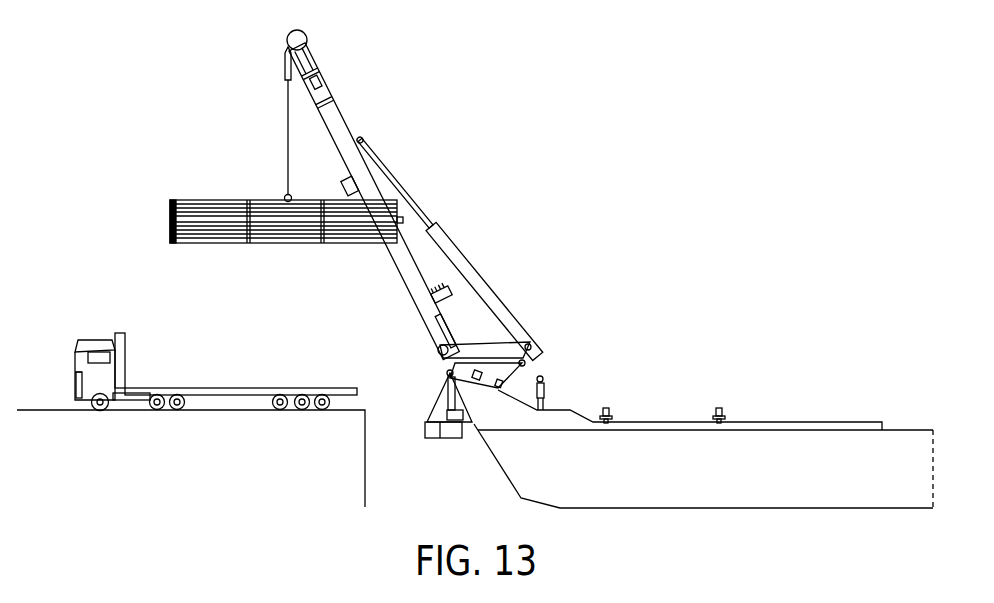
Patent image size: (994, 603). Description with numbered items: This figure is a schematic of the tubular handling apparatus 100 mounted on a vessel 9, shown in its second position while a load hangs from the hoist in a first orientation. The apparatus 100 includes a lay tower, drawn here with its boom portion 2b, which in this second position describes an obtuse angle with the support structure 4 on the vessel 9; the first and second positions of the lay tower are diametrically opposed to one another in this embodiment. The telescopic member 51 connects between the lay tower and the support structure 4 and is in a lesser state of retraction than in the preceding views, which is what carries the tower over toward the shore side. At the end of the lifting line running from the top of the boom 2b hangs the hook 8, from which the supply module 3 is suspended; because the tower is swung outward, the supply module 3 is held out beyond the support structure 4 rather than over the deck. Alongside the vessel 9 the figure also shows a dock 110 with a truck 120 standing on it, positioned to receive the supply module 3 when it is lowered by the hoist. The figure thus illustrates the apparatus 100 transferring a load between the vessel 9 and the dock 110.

The tubular handling apparatus 100 is at (735, 130).
The hook 8 is at (274, 63).
The supply module 3 is at (158, 206).
The boom 2b is at (397, 276).
The telescopic member 51 is at (470, 260).
The support structure 4 is at (726, 386).
The vessel 9 is at (715, 486).
The dock 110 is at (198, 470).
The truck 120 is at (105, 340).